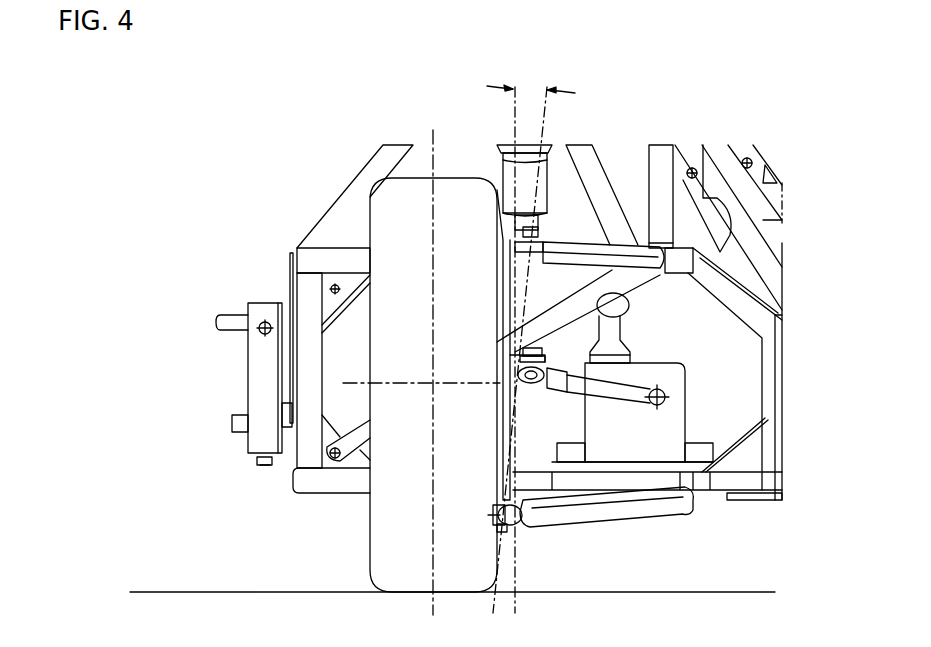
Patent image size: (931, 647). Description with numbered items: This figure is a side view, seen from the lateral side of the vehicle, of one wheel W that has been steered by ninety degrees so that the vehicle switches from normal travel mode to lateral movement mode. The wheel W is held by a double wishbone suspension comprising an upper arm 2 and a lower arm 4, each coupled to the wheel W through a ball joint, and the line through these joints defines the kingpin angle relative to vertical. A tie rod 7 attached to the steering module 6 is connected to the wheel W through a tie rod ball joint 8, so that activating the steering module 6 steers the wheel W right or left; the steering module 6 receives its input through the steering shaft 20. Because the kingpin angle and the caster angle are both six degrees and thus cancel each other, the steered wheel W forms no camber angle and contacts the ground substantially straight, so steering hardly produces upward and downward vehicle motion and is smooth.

The wheel W is at (365, 220).
The upper arm 2 is at (569, 252).
The lower arm 4 is at (578, 508).
The steering module 6 is at (670, 425).
The tie rod 7 is at (628, 393).
The tie rod ball joint 8 is at (548, 398).
The steering shaft 20 is at (678, 178).